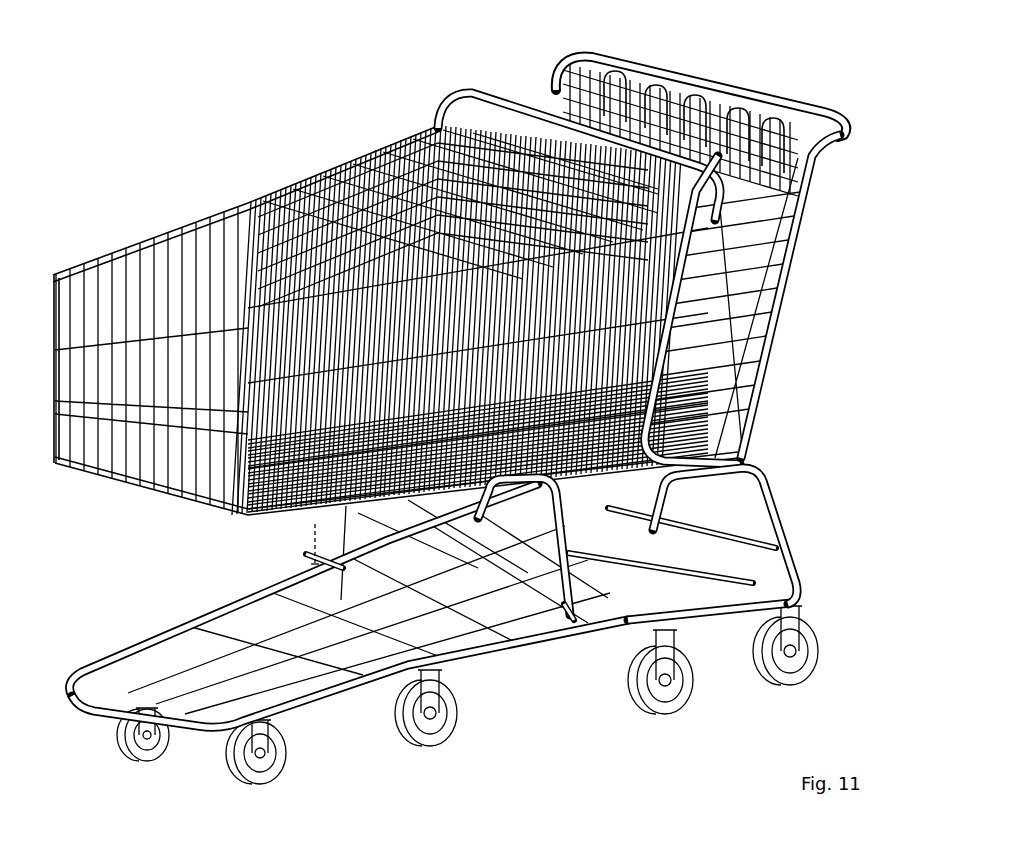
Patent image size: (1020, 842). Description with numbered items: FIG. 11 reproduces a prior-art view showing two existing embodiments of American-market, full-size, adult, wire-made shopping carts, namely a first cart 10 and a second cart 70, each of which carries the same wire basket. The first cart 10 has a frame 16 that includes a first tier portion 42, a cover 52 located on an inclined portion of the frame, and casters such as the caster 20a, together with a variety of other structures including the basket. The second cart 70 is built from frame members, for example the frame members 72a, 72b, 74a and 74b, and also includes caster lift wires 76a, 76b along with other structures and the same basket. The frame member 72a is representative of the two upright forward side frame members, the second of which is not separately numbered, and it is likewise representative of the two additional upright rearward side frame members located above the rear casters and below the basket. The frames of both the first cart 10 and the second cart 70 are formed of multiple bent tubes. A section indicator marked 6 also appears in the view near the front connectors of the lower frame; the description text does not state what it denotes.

The first cart 10 is at (116, 206).
The frame 16 is at (134, 622).
The second cart 70 is at (826, 249).
The caster 20a is at (688, 684).
The first tier portion 42 is at (297, 704).
The cover 52 is at (463, 645).
The upright forward side frame member 72a is at (648, 520).
The frame member 72b is at (453, 493).
The frame member 74a is at (688, 612).
The frame member 74b is at (306, 577).
The caster lift wire 76a is at (548, 615).
The caster lift wire 76b is at (313, 548).
The section line 6- 6 is at (300, 550).